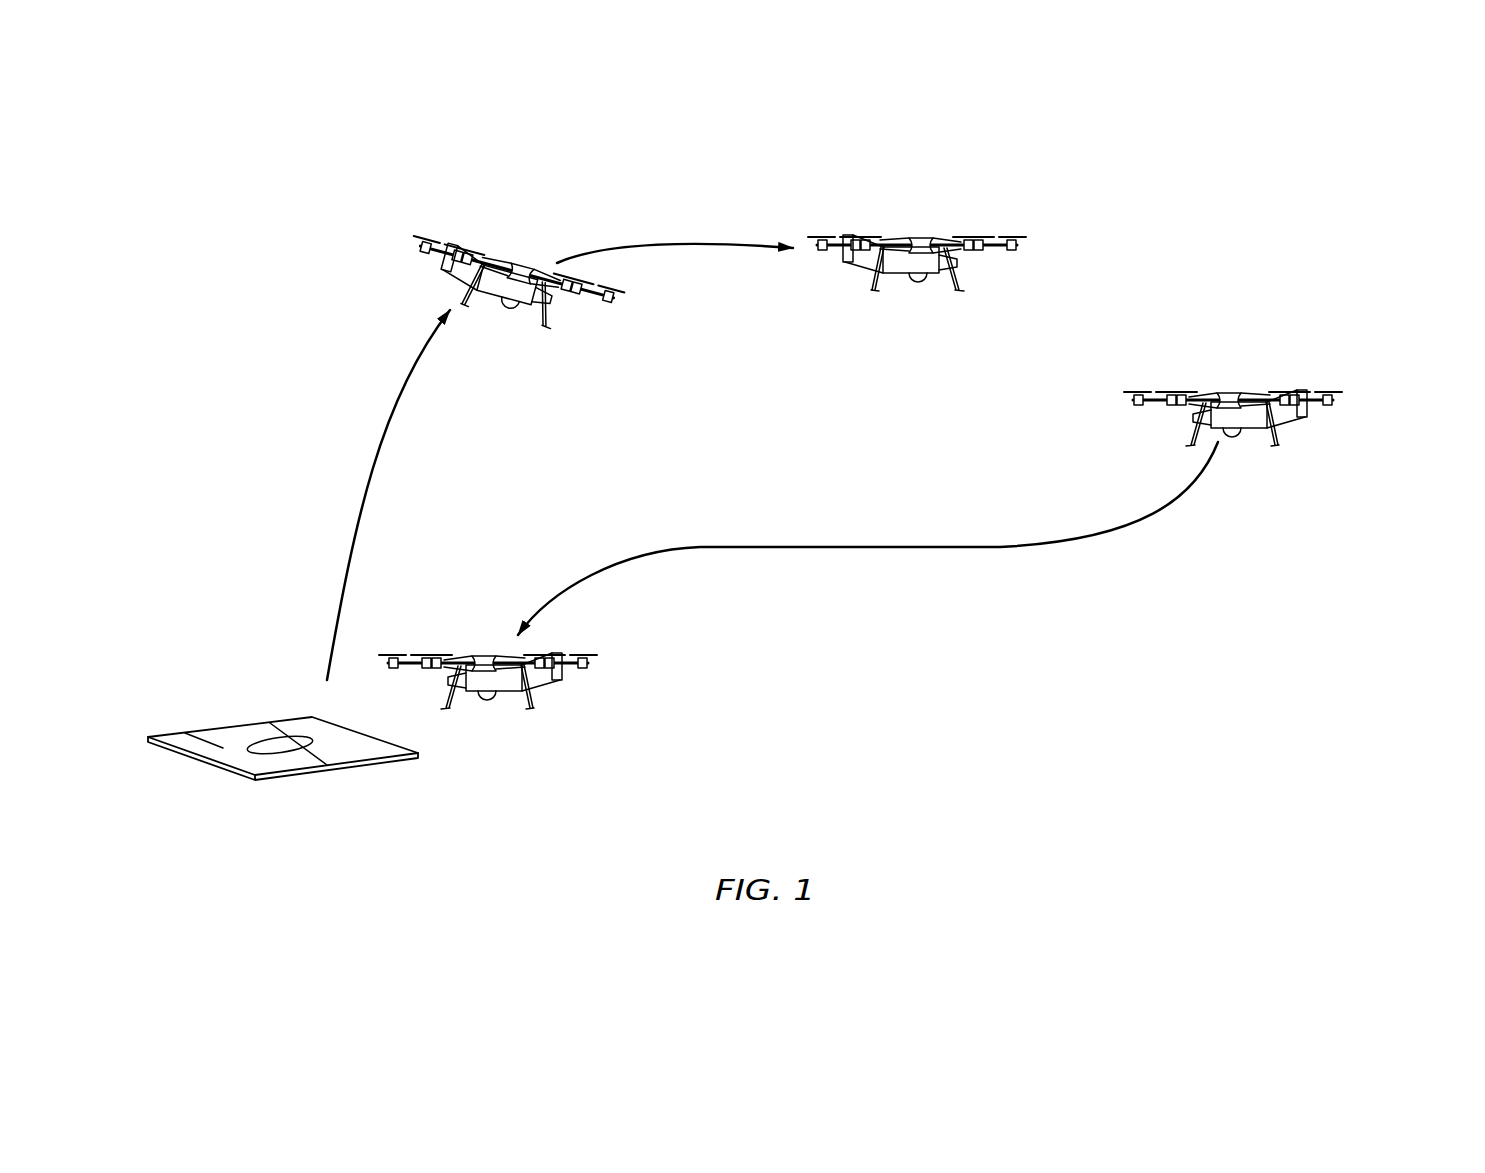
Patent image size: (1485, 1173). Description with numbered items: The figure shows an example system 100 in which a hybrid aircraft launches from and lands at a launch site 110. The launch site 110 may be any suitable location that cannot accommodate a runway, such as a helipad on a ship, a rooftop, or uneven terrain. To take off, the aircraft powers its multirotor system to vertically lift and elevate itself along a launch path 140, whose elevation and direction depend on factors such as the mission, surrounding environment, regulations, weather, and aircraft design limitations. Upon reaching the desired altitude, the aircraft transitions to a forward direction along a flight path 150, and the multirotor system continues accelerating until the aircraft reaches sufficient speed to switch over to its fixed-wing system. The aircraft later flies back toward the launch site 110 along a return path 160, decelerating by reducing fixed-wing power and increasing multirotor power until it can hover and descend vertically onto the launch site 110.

The system 100 is at (1222, 200).
The launch site 110 is at (340, 765).
The launch path 140 is at (365, 465).
The flight path 150 is at (685, 240).
The return path 160 is at (830, 545).